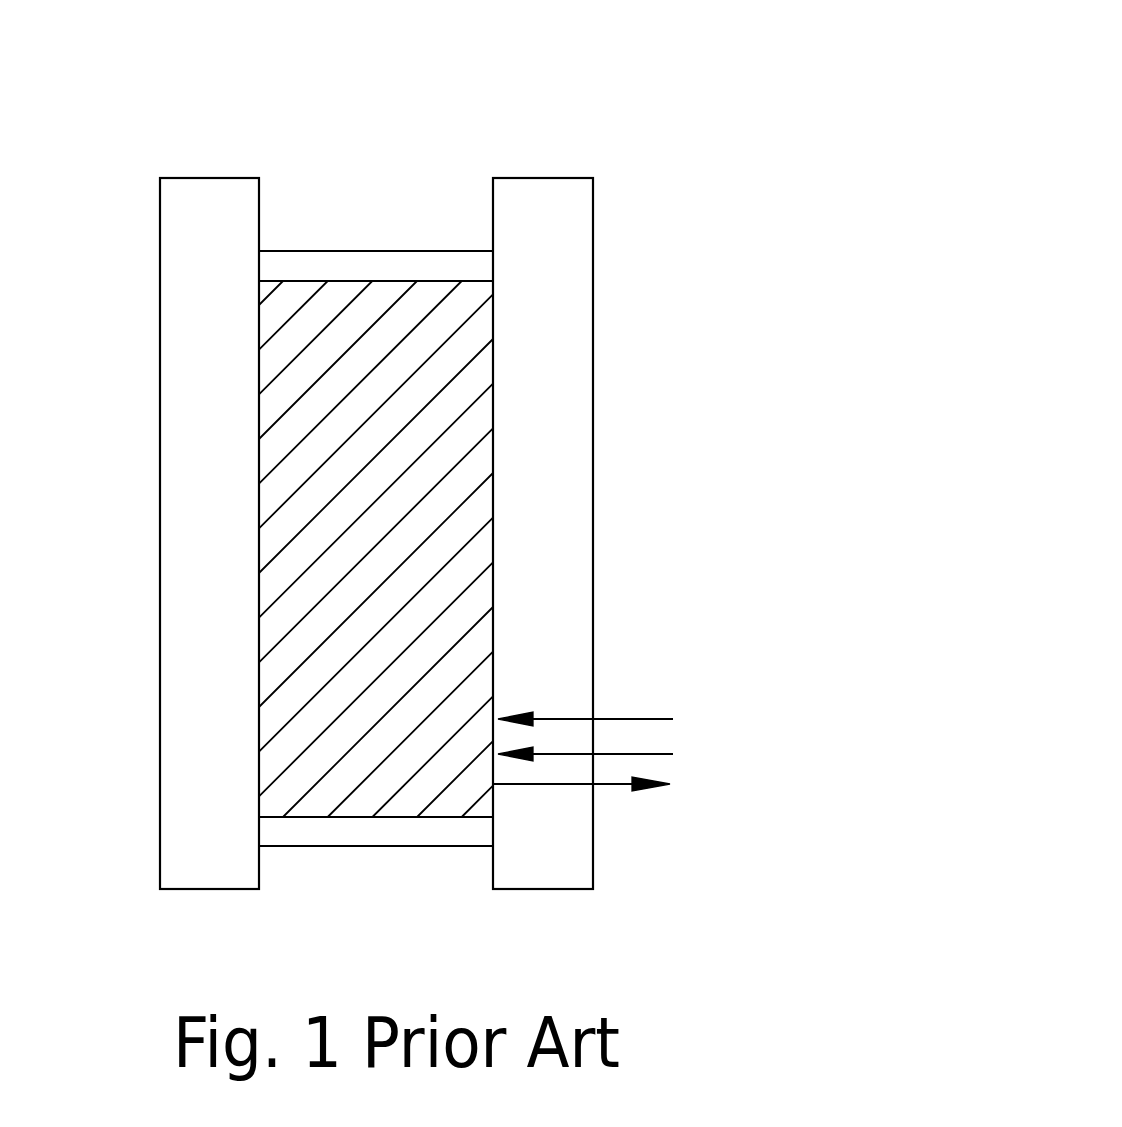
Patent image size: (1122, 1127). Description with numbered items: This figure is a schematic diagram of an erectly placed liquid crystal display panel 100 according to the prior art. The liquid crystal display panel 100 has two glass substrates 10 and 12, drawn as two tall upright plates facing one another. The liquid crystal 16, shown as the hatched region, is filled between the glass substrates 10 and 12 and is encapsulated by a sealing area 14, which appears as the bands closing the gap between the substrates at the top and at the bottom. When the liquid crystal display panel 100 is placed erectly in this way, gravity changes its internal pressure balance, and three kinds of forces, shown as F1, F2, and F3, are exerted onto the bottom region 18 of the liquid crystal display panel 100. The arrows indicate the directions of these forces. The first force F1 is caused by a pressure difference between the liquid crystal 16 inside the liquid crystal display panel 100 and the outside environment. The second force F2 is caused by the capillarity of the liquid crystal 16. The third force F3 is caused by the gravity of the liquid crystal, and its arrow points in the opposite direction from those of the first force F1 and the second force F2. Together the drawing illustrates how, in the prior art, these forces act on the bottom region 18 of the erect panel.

The glass substrate 10 is at (213, 200).
The glass substrate 12 is at (553, 200).
The sealing area 14 is at (378, 265).
The liquid crystal 16 is at (300, 407).
The bottom region 18 is at (493, 742).
The first force F1 is at (615, 712).
The second force F2 is at (615, 750).
The third force F3 is at (613, 792).
The liquid crystal display panel 100 is at (763, 147).